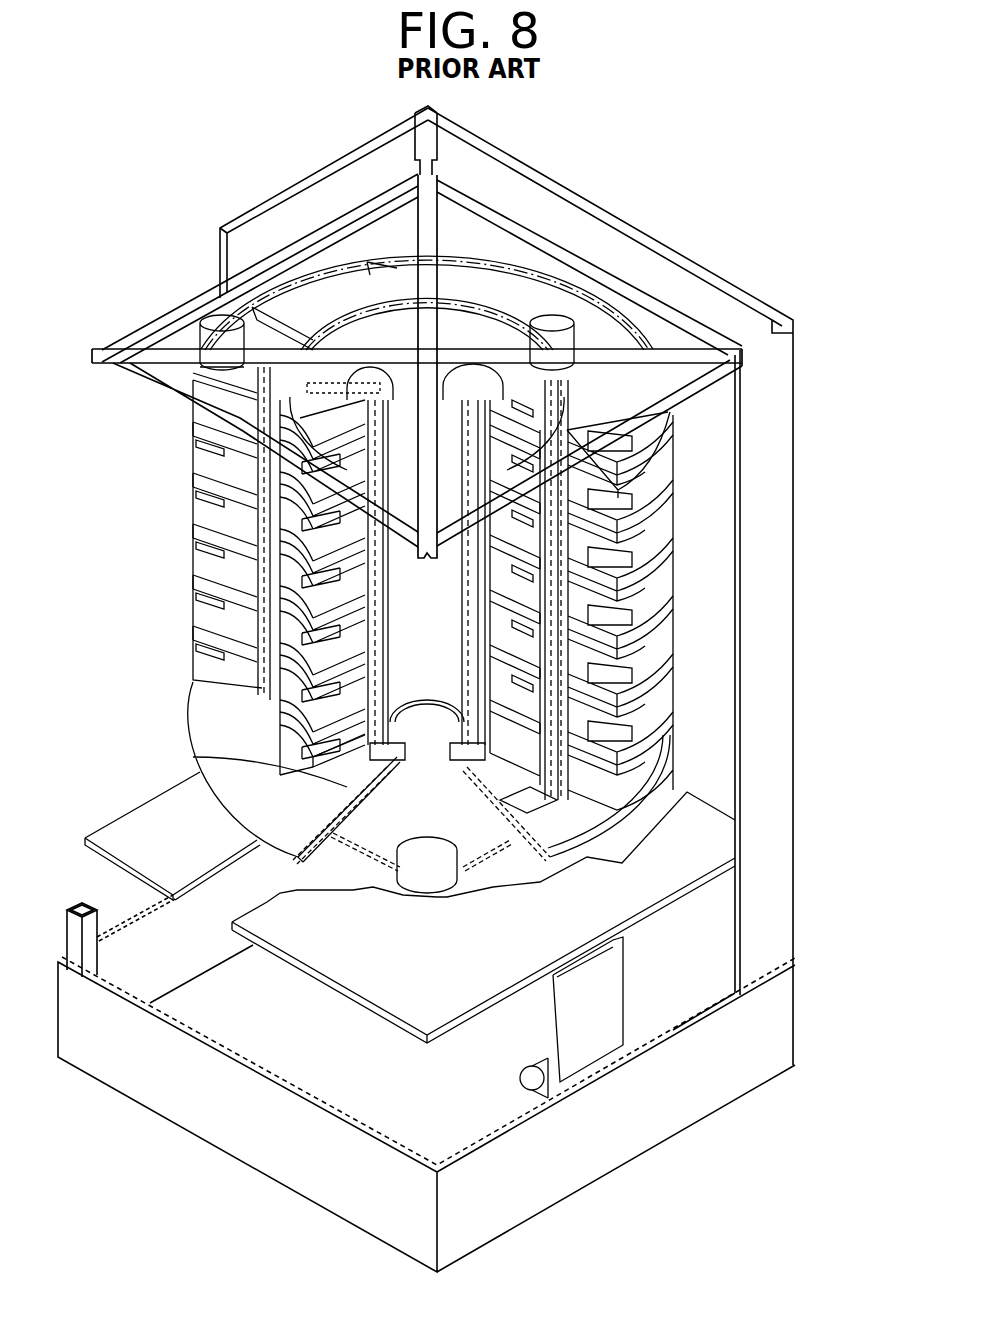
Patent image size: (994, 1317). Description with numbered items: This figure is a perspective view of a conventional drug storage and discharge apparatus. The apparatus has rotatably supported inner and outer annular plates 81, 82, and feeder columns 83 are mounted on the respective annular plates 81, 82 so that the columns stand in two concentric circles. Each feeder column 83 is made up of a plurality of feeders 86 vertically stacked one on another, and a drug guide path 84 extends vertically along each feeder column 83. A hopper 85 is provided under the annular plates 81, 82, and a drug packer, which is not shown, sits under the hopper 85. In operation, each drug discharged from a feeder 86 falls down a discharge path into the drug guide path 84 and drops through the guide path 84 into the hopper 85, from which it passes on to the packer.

The inner annular plate 81 is at (343, 787).
The outer annular plate 82 is at (258, 813).
The feeder column 83 is at (553, 410).
The drug guide path 84 is at (487, 368).
The hopper 85 is at (490, 838).
The feeder 86 is at (640, 700).